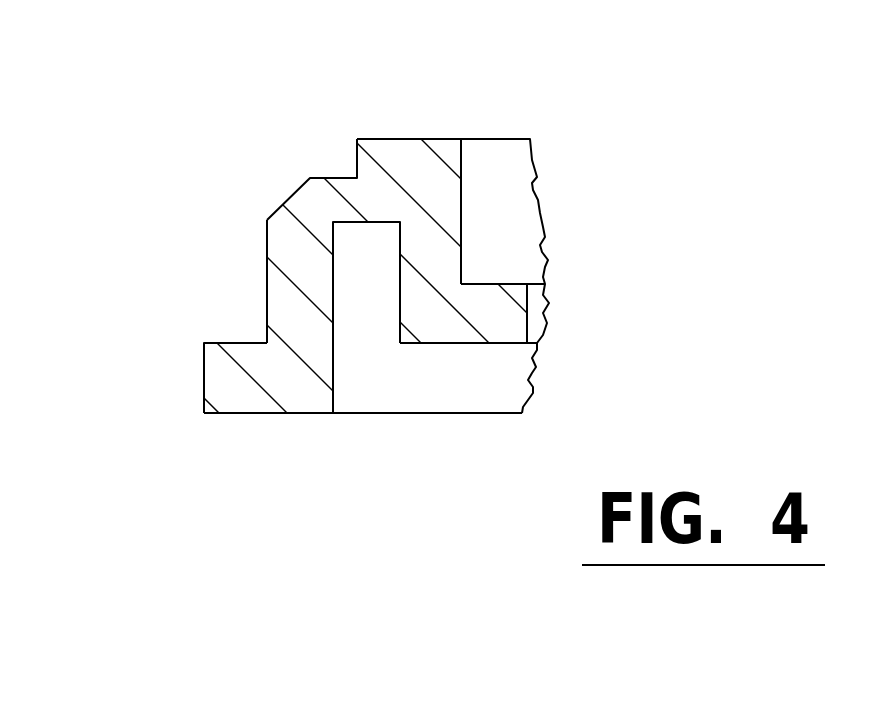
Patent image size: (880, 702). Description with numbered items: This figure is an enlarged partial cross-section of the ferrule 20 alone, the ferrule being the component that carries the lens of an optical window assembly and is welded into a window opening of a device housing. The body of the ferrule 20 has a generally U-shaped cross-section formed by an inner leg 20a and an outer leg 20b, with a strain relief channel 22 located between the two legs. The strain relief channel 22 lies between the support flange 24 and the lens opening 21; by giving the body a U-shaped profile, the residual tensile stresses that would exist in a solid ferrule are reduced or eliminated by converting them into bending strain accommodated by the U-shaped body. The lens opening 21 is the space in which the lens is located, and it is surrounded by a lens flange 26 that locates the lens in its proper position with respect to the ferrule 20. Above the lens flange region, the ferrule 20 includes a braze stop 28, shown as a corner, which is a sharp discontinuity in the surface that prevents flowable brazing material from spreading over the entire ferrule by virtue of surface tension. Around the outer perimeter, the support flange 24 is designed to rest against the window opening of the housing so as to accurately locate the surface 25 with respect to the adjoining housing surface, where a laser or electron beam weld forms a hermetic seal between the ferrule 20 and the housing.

The ferrule 20 is at (590, 183).
The inner leg 20a is at (452, 265).
The outer leg 20b is at (263, 279).
The lens opening 21 is at (463, 218).
The strain relief channel 22 is at (372, 345).
The support flange 24 is at (222, 342).
The surface 25 is at (242, 415).
The lens flange 26 is at (508, 284).
The braze stop 28 is at (356, 144).